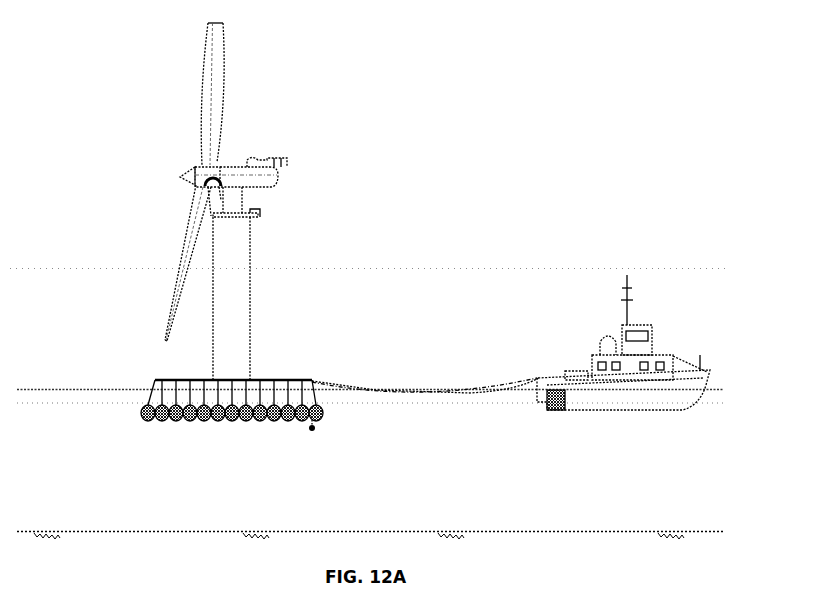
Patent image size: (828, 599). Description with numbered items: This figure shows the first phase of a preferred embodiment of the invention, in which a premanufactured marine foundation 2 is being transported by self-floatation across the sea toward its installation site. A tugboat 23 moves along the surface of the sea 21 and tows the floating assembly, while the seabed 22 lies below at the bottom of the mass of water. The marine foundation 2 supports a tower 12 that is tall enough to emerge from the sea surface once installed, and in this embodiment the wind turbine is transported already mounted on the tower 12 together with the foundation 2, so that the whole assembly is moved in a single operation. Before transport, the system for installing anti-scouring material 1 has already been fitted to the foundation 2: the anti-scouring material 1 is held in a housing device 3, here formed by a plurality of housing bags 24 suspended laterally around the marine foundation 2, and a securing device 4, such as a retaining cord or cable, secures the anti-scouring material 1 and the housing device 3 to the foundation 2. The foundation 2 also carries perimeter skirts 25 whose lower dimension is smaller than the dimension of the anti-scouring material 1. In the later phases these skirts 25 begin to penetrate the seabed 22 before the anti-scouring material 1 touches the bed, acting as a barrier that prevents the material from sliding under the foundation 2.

The anti-scouring material 1 is at (204, 413).
The marine foundation 2 is at (250, 323).
The tower 12 is at (262, 392).
The securing device 4 is at (287, 392).
The housing device 3 is at (322, 413).
The housing bags 24 is at (426, 399).
The perimeter skirts 25 is at (153, 427).
The surface of the sea 21 is at (59, 389).
The seabed 22 is at (577, 531).
The tugboat 23 is at (576, 374).